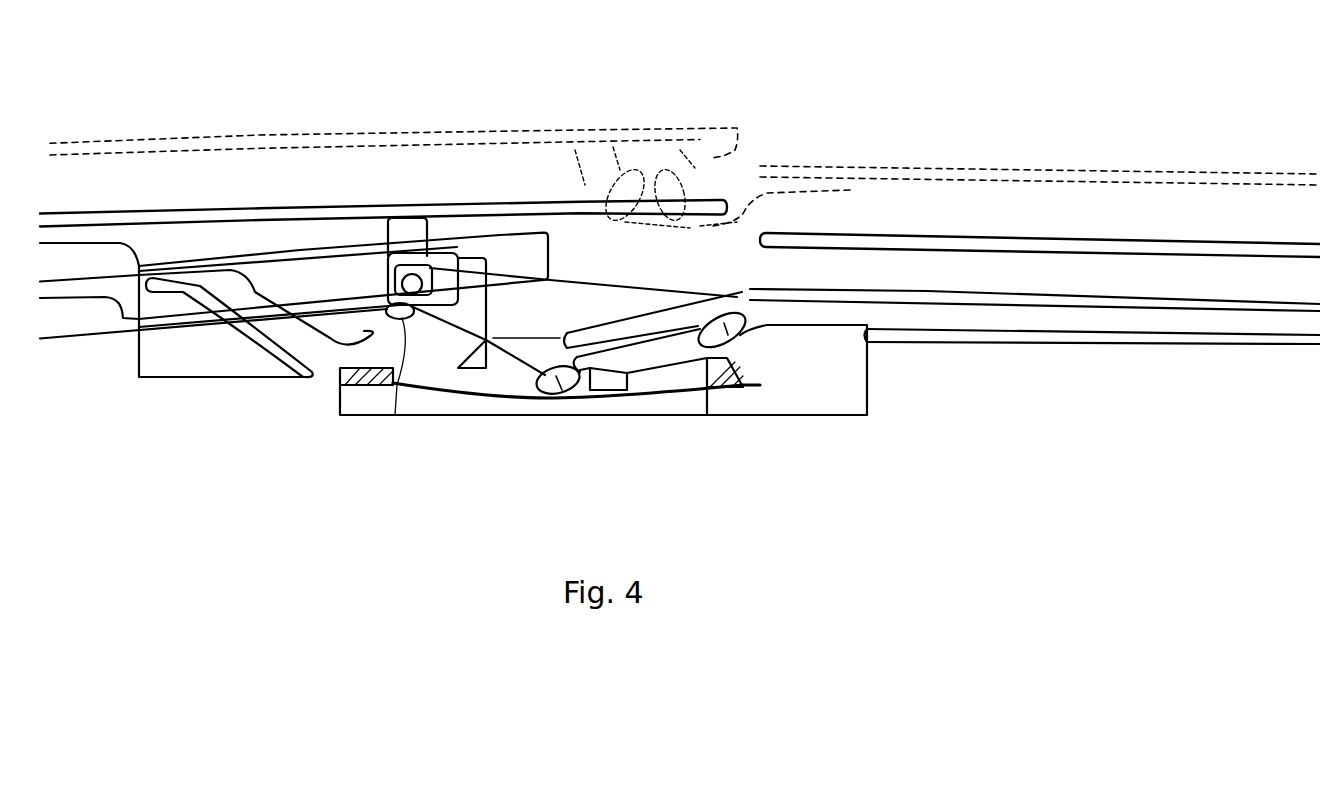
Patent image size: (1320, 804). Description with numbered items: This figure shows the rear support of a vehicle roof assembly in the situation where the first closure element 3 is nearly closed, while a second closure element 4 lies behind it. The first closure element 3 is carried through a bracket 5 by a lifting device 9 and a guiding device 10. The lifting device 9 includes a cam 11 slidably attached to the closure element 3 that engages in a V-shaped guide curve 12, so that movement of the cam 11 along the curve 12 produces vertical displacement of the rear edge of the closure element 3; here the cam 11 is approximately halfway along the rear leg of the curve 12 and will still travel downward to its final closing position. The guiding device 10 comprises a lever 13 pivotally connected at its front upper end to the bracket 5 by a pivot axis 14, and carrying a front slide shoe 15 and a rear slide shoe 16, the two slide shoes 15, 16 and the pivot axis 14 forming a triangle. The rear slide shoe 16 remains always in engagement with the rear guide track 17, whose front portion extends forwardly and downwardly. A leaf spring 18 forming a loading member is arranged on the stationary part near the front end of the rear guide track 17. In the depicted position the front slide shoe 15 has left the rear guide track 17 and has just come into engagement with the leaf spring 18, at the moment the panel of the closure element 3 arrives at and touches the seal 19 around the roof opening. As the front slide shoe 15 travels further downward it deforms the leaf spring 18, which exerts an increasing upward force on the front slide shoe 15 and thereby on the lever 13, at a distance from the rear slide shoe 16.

The first closure element 3 is at (182, 215).
The second closure element 4 is at (1107, 252).
The bracket 5 is at (404, 238).
The lifting device 9 is at (141, 394).
The guiding device 10 is at (409, 427).
The cam 11 is at (485, 258).
The guide curve 12 is at (325, 332).
The lever 13 is at (520, 330).
The pivot axis 14 is at (440, 252).
The front slide shoe 15 is at (572, 393).
The rear slide shoe 16 is at (745, 345).
The rear guide track 17 is at (883, 312).
The leaf spring 18 is at (682, 392).
The seal 19 is at (712, 137).